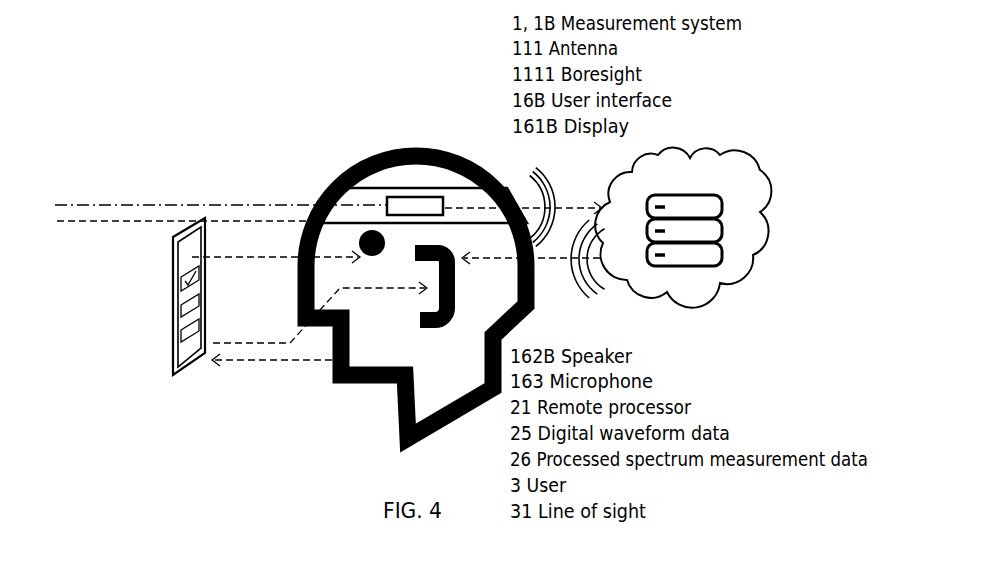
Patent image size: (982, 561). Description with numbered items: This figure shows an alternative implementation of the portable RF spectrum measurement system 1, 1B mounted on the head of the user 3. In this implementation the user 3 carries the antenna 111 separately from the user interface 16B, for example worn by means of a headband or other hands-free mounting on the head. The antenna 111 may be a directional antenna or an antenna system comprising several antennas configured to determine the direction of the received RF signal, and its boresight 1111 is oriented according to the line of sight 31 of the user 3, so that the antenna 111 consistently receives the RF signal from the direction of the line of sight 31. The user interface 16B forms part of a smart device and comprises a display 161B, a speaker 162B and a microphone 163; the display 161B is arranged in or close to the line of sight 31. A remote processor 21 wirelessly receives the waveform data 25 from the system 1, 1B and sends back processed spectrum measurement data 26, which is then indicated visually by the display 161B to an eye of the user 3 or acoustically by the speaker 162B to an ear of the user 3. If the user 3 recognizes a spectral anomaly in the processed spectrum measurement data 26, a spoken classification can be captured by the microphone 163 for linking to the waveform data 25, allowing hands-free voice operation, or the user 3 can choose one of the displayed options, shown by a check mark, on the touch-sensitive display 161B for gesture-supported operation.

The portable RF spectrum measurement system 1 is at (419, 131).
The portable RF spectrum measurement system 1B is at (419, 205).
The antenna 111 is at (398, 196).
The boresight 1111 is at (66, 203).
The user interface 16B is at (180, 282).
The display 161B is at (202, 206).
The speaker 162B is at (200, 368).
The microphone 163 is at (320, 312).
The remote processor 21 is at (693, 194).
The waveform data 25 is at (566, 206).
The processed spectrum measurement data 26 is at (485, 258).
The user 3 is at (425, 148).
The line of sight 31 is at (66, 247).